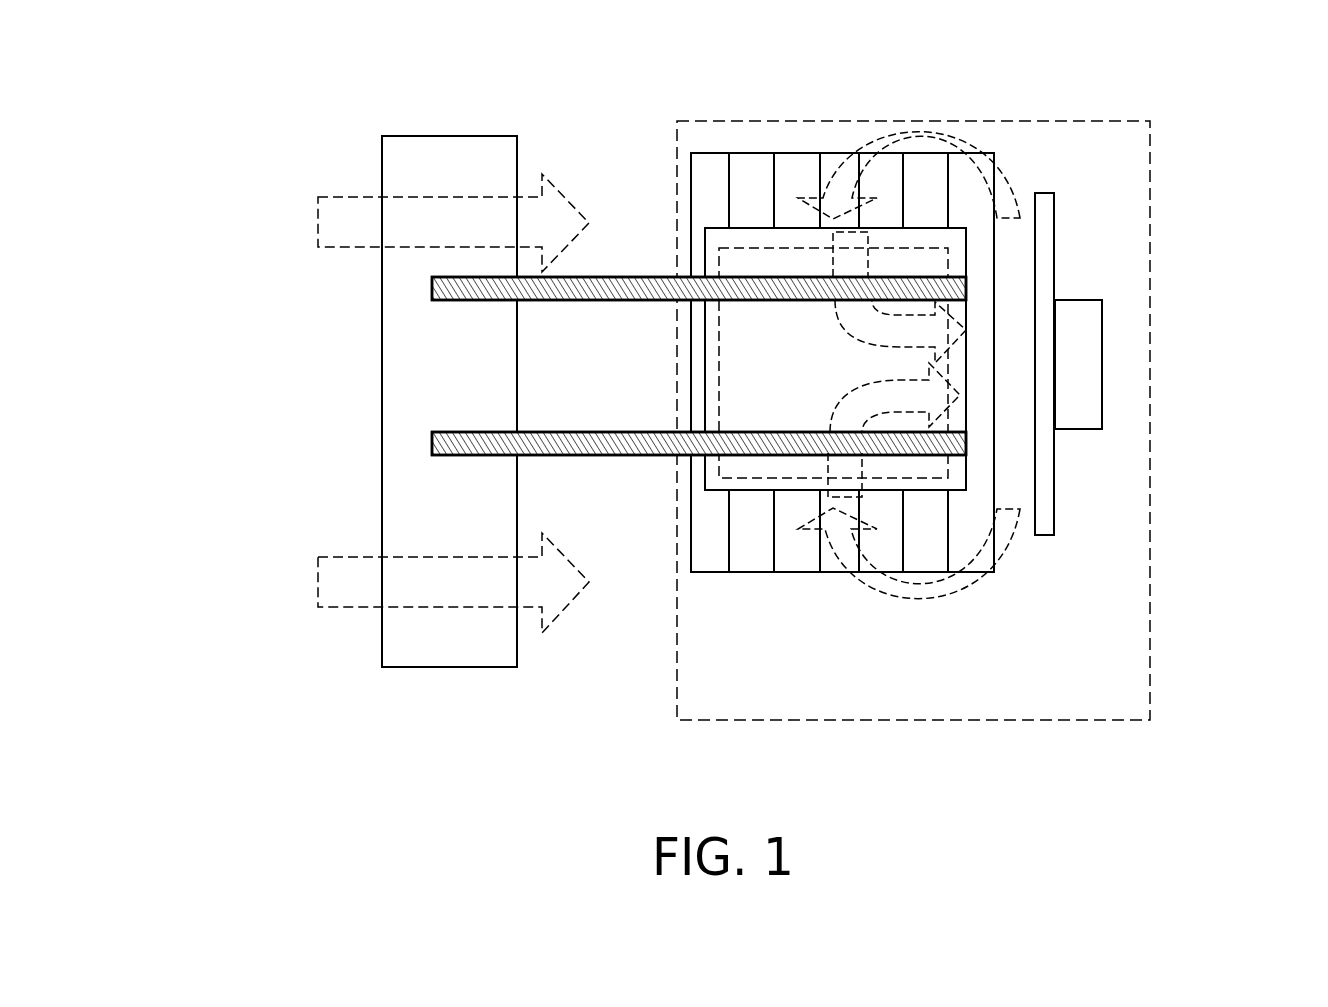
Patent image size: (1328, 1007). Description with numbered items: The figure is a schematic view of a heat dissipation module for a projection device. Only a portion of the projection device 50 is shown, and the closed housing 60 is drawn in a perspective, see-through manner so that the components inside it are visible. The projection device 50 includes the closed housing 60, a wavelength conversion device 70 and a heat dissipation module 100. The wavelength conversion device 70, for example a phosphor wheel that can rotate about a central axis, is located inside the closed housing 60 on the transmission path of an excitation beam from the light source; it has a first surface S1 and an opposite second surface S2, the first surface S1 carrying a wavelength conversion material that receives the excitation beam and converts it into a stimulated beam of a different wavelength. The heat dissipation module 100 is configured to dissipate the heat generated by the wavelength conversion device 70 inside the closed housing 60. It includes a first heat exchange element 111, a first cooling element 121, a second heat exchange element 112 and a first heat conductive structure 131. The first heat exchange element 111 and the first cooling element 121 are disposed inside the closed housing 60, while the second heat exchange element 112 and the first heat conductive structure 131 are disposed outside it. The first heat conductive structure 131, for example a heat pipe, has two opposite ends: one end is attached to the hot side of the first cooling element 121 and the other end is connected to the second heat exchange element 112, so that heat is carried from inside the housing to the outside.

The heat dissipation module 100 is at (147, 25).
The first heat exchange element 111 is at (712, 162).
The second heat exchange element 112 is at (452, 150).
The first cooling element 121 is at (780, 265).
The first heat conductive structure 131 is at (634, 300).
The closed housing 60 is at (1040, 121).
The wavelength conversion device 70 is at (1078, 318).
The projection device 50 is at (1312, 779).
The first surface S1 is at (1032, 229).
The second surface S2 is at (1068, 220).